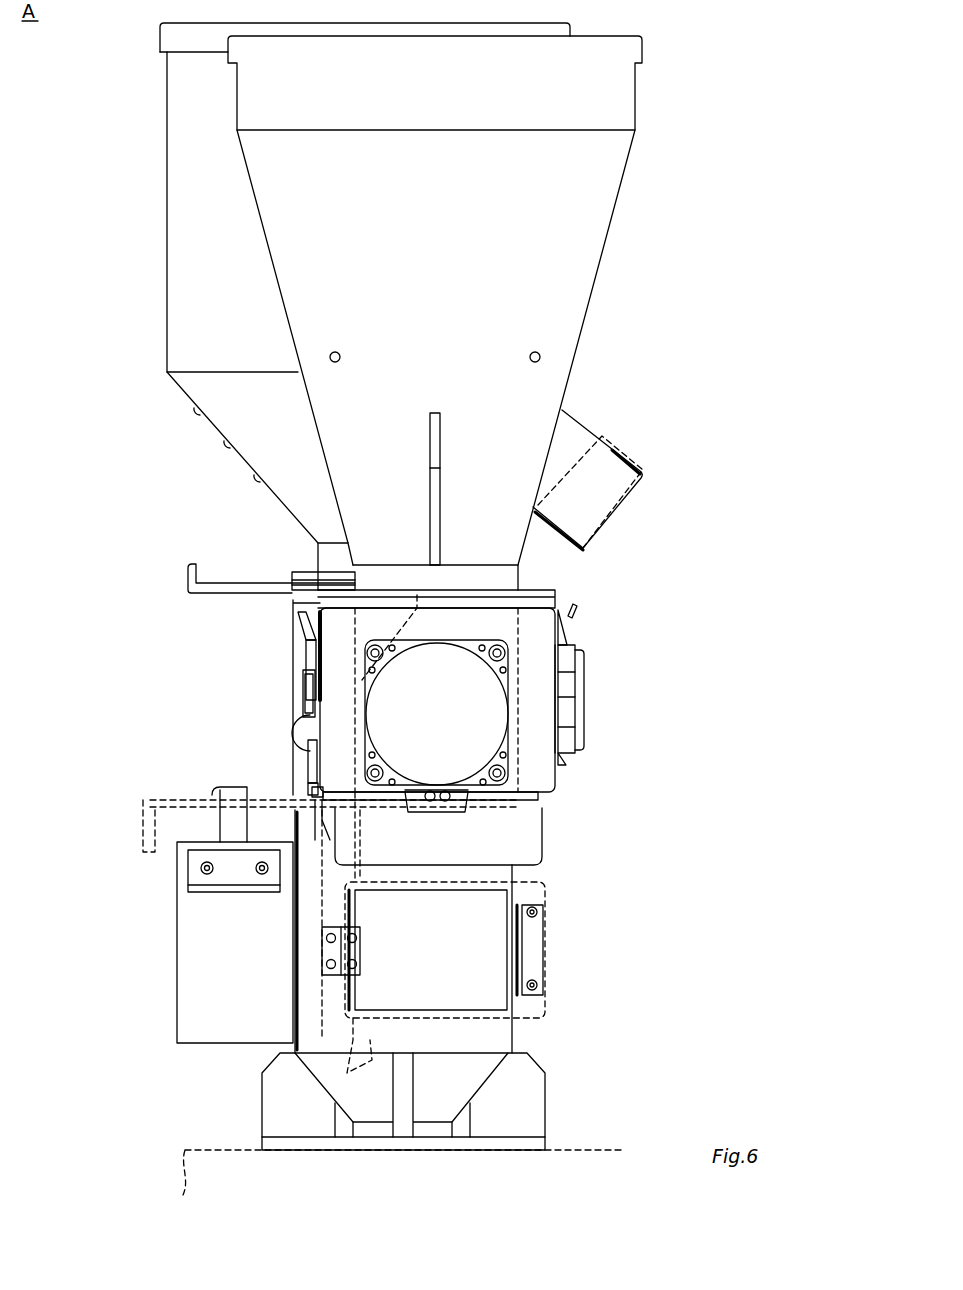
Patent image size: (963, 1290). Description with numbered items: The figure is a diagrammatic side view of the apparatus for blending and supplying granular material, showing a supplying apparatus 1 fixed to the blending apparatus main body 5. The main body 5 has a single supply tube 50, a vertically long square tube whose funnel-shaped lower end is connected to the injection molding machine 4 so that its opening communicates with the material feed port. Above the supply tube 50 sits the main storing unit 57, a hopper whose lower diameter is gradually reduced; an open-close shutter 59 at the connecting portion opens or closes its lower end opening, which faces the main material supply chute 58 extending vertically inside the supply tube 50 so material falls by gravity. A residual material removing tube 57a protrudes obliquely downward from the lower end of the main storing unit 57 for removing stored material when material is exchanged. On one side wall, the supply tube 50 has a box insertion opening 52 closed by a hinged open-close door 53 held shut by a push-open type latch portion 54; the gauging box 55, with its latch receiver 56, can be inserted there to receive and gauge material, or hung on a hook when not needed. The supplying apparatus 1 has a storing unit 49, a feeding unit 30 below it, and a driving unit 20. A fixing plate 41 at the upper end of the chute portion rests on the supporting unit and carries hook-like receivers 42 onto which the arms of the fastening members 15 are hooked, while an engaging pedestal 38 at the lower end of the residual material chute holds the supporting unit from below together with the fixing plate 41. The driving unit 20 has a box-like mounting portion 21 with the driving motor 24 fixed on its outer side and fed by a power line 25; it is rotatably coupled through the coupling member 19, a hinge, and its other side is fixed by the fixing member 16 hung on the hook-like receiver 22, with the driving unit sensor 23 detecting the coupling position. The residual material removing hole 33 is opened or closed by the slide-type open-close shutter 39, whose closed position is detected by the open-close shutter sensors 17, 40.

The apparatus for supplying granular material 1 is at (703, 463).
The storing unit 49 is at (597, 208).
The main storing unit 57 is at (172, 325).
The residual material removing tube 57a is at (575, 432).
The driving motor 24 is at (447, 655).
The fixing plate 41 is at (540, 600).
The open-close shutter 59 is at (190, 572).
The driving unit 20 is at (563, 771).
The driving unit sensor 23 is at (320, 750).
The hook-like receiver 42 is at (300, 618).
The fastening member 15 is at (302, 660).
The coupling member 19 is at (570, 686).
The mounting portion 21 is at (547, 735).
The hook-like receiver 22 is at (302, 712).
The fixing member 16 is at (300, 735).
The open-close shutter sensor 17 is at (312, 782).
The blending apparatus main body 5 is at (165, 700).
The feeding unit 30 is at (528, 772).
The power line 25 is at (435, 812).
The engaging pedestal 38 is at (530, 846).
The residual material removing hole 33 is at (355, 805).
The open-close shutter sensor 40 is at (150, 810).
The open-close shutter 39 is at (150, 840).
The gauging box 55 is at (190, 968).
The latch receiver 56 is at (205, 896).
The supply tube 50 is at (300, 1000).
The open-close door 53 is at (548, 1000).
The box insertion opening 52 is at (505, 980).
The latch portion 54 is at (535, 944).
The main material supply chute 58 is at (322, 1040).
The injection molding machine 4 is at (623, 1195).